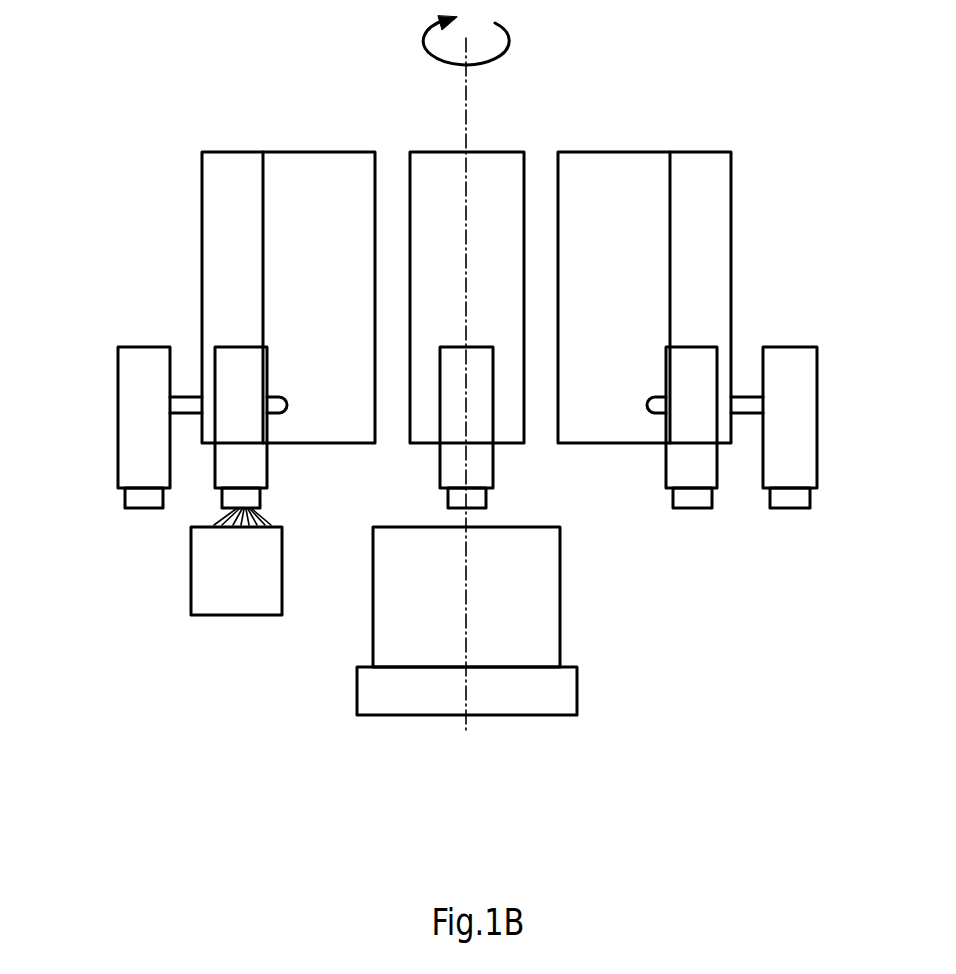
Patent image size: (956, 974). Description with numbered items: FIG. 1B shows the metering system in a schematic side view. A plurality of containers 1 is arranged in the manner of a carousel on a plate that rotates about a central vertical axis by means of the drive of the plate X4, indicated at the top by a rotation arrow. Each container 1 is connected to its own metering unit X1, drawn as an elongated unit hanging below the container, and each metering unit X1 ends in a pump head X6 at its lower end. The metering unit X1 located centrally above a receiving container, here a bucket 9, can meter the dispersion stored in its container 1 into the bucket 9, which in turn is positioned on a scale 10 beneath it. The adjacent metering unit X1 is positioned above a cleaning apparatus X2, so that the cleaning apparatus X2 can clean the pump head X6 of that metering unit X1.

The container 1 is at (229, 231).
The metering unit X1 is at (117, 370).
The pump head X6 is at (122, 502).
The cleaning apparatus X2 is at (187, 583).
The drive of the plate X4 is at (510, 40).
The bucket 9 is at (503, 618).
The scale 10 is at (578, 683).